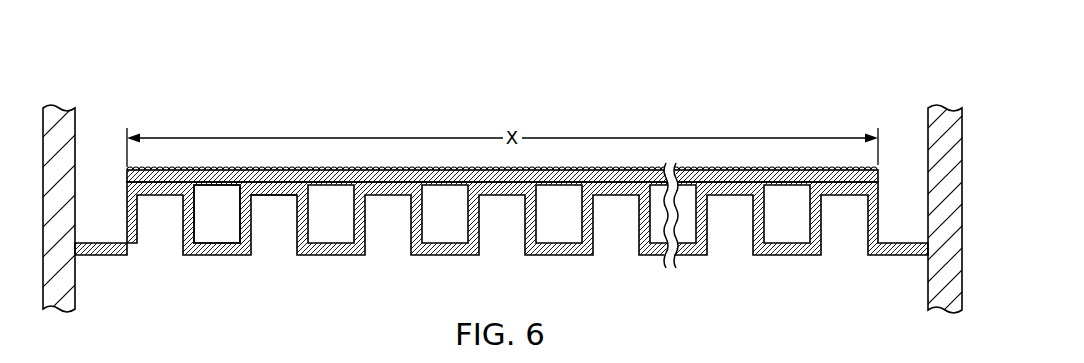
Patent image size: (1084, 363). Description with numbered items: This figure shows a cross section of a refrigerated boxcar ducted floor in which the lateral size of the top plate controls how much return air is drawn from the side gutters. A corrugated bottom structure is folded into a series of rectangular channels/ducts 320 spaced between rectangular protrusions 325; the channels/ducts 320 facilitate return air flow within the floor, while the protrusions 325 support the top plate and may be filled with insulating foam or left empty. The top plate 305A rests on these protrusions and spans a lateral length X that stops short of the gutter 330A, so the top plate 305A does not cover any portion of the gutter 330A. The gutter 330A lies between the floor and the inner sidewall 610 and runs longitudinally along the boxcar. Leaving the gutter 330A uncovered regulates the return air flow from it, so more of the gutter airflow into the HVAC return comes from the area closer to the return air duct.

The gutter 330A is at (105, 191).
The top plate 305A is at (263, 177).
The channel/duct 320 is at (222, 223).
The protrusion 325 is at (272, 223).
The inner sidewall 610 is at (928, 117).